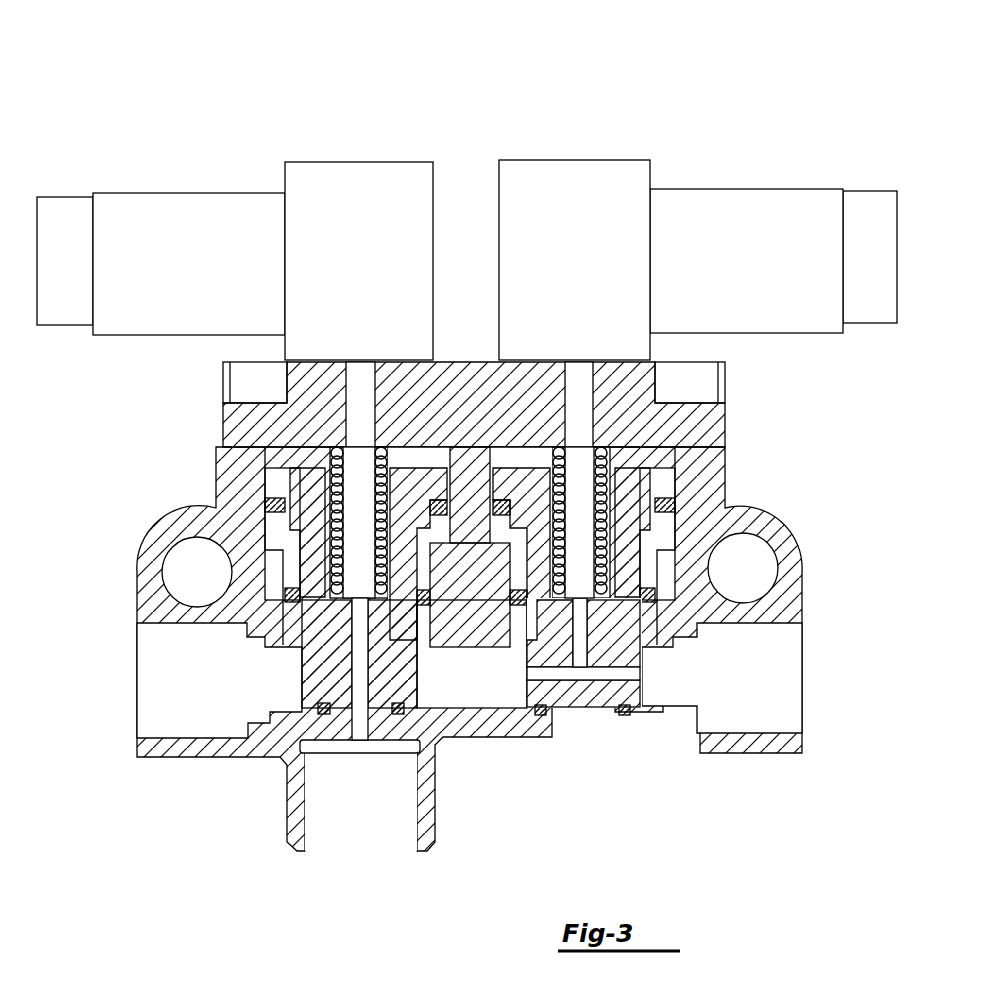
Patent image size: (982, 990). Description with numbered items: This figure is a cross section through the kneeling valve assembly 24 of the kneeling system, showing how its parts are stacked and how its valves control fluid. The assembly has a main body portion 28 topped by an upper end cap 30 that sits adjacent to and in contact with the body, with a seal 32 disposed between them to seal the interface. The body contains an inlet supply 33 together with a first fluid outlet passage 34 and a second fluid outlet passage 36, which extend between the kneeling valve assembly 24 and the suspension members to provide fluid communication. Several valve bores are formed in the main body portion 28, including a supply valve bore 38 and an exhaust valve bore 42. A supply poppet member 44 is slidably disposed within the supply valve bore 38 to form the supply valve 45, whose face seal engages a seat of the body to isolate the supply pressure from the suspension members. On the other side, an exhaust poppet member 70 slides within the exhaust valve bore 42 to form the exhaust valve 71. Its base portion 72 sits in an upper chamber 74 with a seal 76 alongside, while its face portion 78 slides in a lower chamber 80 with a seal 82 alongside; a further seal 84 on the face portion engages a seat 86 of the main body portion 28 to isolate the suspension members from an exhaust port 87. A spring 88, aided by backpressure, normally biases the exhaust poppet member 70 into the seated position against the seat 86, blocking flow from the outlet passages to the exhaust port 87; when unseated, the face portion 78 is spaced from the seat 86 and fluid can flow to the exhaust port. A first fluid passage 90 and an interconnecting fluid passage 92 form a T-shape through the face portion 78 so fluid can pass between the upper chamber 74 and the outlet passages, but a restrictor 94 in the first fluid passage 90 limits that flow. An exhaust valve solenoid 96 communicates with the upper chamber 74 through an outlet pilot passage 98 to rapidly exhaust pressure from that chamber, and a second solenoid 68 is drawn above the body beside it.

The kneeling valve assembly 24 is at (762, 111).
The main body portion 28 is at (790, 528).
The upper end cap 30 is at (727, 418).
The seal 32 is at (684, 470).
The inlet supply 33 is at (345, 809).
The first fluid outlet passage 34 is at (160, 676).
The second fluid outlet passage 36 is at (768, 723).
The supply valve bore 38 is at (285, 557).
The exhaust valve bore 42 is at (655, 562).
The supply poppet member 44 is at (300, 677).
The supply valve 45 is at (240, 774).
The first solenoid 68 is at (357, 185).
The exhaust poppet member 70 is at (645, 660).
The exhaust valve 71 is at (658, 756).
The base portion 72 is at (520, 462).
The upper chamber 74 is at (634, 462).
The seal 76 is at (662, 502).
The face portion 78 is at (594, 710).
The lower chamber 80 is at (472, 690).
The seal 82 is at (672, 608).
The seal 84 is at (630, 712).
The seat 86 is at (660, 712).
The exhaust port 87 is at (562, 725).
The spring 88 is at (574, 468).
The first fluid passage 90 is at (525, 672).
The interconnecting fluid passage 92 is at (646, 688).
The restrictor 94 is at (645, 643).
The exhaust valve solenoid 96 is at (563, 175).
The outlet pilot passage 98 is at (612, 400).